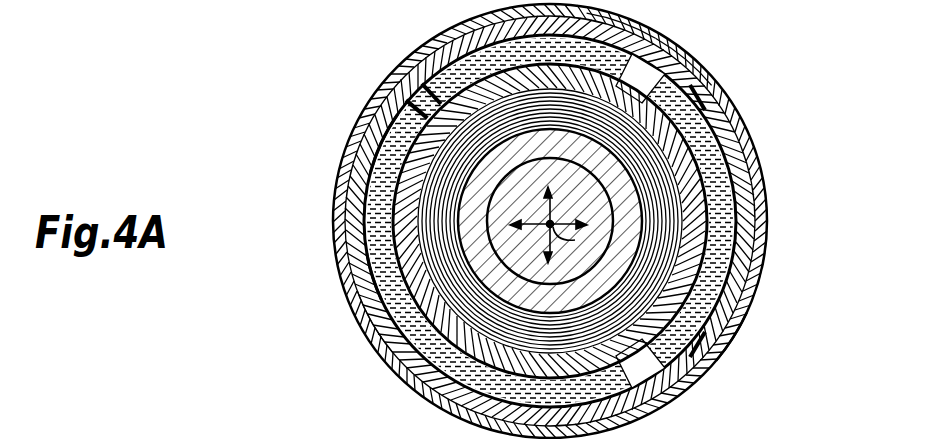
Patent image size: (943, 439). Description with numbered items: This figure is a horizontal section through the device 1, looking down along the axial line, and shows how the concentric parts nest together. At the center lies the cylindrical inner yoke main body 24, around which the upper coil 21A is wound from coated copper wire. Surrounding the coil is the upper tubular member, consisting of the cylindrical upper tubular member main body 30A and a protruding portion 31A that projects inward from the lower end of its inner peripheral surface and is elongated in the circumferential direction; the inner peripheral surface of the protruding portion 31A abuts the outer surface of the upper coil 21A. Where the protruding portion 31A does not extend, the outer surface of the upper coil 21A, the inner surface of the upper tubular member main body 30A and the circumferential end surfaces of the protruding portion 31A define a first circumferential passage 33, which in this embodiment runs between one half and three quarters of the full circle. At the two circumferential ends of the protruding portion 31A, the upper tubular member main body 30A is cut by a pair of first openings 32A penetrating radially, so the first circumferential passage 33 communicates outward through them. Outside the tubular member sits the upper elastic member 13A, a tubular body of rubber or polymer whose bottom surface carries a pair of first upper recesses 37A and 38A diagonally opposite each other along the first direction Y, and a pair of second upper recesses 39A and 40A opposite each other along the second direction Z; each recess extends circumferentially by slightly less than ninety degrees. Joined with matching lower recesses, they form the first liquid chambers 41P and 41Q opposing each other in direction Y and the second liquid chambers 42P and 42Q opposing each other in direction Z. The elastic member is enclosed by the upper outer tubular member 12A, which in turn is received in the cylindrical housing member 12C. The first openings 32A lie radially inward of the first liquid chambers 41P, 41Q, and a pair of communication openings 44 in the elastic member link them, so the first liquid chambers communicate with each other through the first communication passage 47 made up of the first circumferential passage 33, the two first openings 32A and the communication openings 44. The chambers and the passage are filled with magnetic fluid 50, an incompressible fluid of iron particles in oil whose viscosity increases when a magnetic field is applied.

The motor 1 is at (786, 37).
The upper outer tubular member 12A is at (340, 237).
The housing member 12C is at (770, 268).
The upper elastic member 13A is at (735, 340).
The upper coil 21A is at (430, 340).
The inner yoke main body 24 is at (507, 150).
The upper tubular member main body 30A is at (372, 322).
The protruding portion 31A is at (718, 142).
The first openings 32A is at (700, 89).
The first circumferential passage 33 is at (400, 106).
The first upper recess 37A is at (620, 21).
The first upper recess 38A is at (665, 405).
The second upper recess 39A is at (757, 231).
The second upper recess 40A is at (365, 277).
The first liquid chamber 41P is at (478, 30).
The first liquid chamber 41Q is at (442, 410).
The second liquid chamber 42P is at (345, 193).
The second liquid chamber 42Q is at (886, 200).
The communication openings 44 is at (690, 63).
The first communication passage 47 is at (378, 140).
The magnetic fluid 50 is at (648, 53).